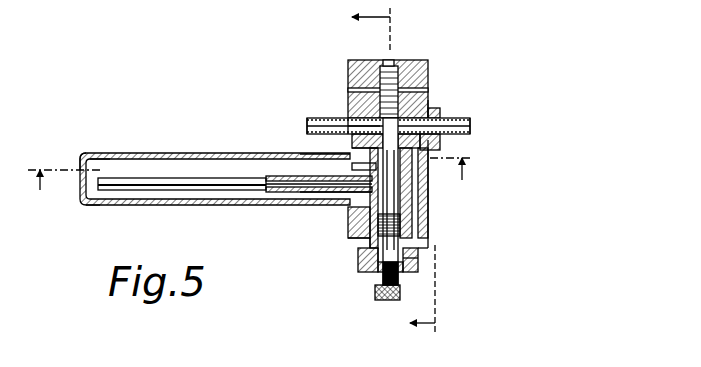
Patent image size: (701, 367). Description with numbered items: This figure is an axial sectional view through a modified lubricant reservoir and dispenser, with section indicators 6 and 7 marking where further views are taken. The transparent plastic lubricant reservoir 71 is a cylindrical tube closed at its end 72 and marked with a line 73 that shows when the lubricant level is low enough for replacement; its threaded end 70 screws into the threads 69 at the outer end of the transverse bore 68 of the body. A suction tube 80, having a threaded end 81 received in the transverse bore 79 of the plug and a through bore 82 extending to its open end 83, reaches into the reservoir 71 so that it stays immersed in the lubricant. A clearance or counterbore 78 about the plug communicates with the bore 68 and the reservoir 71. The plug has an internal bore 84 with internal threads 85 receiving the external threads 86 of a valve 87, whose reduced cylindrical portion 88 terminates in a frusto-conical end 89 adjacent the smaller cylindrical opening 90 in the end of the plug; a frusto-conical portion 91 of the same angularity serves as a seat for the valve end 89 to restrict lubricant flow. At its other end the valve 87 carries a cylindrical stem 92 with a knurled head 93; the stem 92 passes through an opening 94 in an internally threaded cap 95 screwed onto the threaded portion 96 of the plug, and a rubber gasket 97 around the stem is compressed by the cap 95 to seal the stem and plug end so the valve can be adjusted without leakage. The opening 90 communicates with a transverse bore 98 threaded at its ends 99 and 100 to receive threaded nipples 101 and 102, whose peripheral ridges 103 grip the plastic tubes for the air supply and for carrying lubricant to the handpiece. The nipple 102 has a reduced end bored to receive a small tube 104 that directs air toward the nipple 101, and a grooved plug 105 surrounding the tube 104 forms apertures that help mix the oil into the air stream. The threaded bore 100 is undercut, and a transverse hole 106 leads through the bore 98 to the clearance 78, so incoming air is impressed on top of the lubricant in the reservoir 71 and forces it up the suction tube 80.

The lubricant reservoir 71 is at (205, 150).
The closed end of reservoir 72 is at (84, 160).
The line on reservoir 73 is at (106, 168).
The open end of suction tube 83 is at (95, 205).
The suction tube 80 is at (252, 184).
The through bore of suction tube 82 is at (306, 180).
The transverse bore of plug 79 is at (345, 189).
The threaded end of suction tube 81 is at (352, 168).
The threads of transverse bore 69 is at (320, 155).
The plug surrounding tube 105 is at (378, 118).
The tube 104 is at (390, 72).
The transverse hole 106 is at (432, 110).
The threaded nipple 102 is at (436, 120).
The threaded end of transverse bore 100 is at (442, 128).
The peripheral ridges 103 is at (318, 134).
The threaded nipple 101 is at (360, 118).
The threaded end of transverse bore 99 is at (366, 120).
The cylindrical opening 90 is at (386, 141).
The frusto-conical end of valve 89 is at (422, 142).
The transverse bore 98 is at (360, 147).
The reduced cylindrical portion of valve 88 is at (430, 160).
The valve 87 is at (414, 190).
The clearance or counterbore 78 is at (412, 212).
The frusto-conical portion 91 is at (390, 201).
The external threads of valve 86 is at (410, 230).
The transverse bore of body 68 is at (350, 214).
The threaded end of reservoir 70 is at (358, 236).
The internal threads of plug bore 85 is at (362, 244).
The rubber gasket 97 is at (360, 266).
The opening in cap 94 is at (420, 268).
The internally threaded cap 95 is at (418, 250).
The threaded portion of plug 96 is at (420, 258).
The internal bore of plug 84 is at (378, 274).
The cylindrical stem 92 is at (400, 280).
The knurled head 93 is at (380, 298).
The section line 7 is at (247, 176).
The section line 6 is at (381, 171).